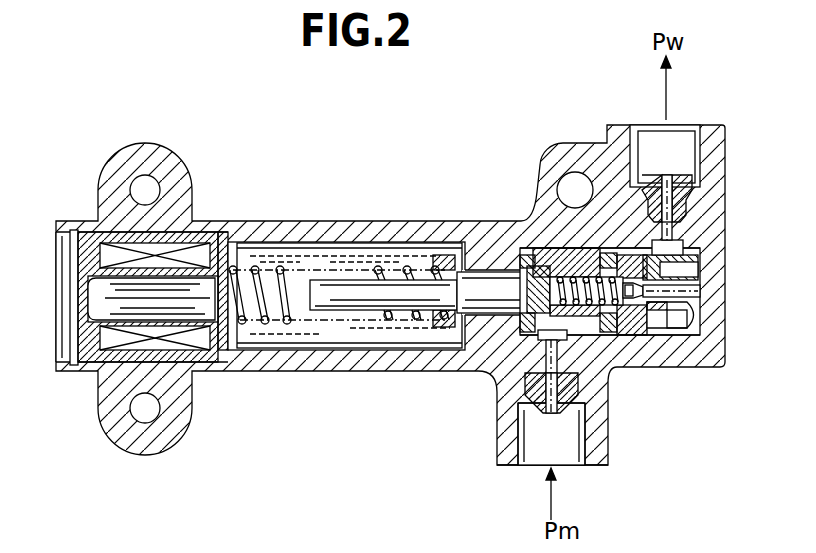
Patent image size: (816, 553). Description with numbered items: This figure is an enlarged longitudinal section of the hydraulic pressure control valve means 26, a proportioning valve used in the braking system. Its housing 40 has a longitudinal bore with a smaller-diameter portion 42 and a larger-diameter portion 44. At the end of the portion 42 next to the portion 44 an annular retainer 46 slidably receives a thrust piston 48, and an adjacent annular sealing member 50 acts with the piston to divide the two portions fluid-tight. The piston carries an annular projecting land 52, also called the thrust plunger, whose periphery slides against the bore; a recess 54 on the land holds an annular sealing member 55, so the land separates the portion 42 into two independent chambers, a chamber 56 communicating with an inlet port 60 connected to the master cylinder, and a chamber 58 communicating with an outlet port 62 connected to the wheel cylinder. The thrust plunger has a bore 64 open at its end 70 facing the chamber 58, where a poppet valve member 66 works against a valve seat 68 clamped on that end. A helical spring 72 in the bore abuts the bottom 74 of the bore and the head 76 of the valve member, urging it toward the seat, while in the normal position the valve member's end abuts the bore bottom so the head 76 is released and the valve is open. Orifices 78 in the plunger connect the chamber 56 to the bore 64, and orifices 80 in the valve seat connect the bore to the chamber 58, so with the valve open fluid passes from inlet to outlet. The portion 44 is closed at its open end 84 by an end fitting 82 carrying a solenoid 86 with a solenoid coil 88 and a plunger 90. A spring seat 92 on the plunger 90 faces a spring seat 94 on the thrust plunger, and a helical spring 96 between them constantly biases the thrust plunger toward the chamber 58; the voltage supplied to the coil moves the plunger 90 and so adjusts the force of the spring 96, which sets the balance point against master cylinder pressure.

The hydraulic pressure control valve means 26 is at (352, 212).
The housing 40 is at (344, 362).
The bore portion 42 is at (522, 250).
The bore portion 44 is at (297, 258).
The annular retainer 46 is at (483, 252).
The thrust piston 48 is at (613, 310).
The annular sealing member 50 is at (478, 358).
The annular projecting land 52 is at (632, 247).
The recess 54 is at (637, 322).
The annular sealing member 55 is at (603, 250).
The chamber 56 is at (609, 440).
The chamber 58 is at (690, 315).
The inlet port 60 is at (537, 445).
The outlet port 62 is at (681, 143).
The bore 64 is at (540, 253).
The valve member 66 is at (700, 290).
The valve seat 68 is at (683, 302).
The open end 70 is at (692, 265).
The helical spring 72 is at (607, 333).
The bottom 74 is at (700, 310).
The head 76 is at (658, 342).
The orifices 78 is at (498, 392).
The orifices 80 is at (684, 272).
The end fitting 82 is at (85, 370).
The open end 84 is at (56, 297).
The solenoid 86 is at (190, 226).
The solenoid coil 88 is at (107, 232).
The plunger 90 is at (195, 300).
The spring seat 92 is at (236, 343).
The spring seat 94 is at (443, 257).
The helical spring 96 is at (388, 316).